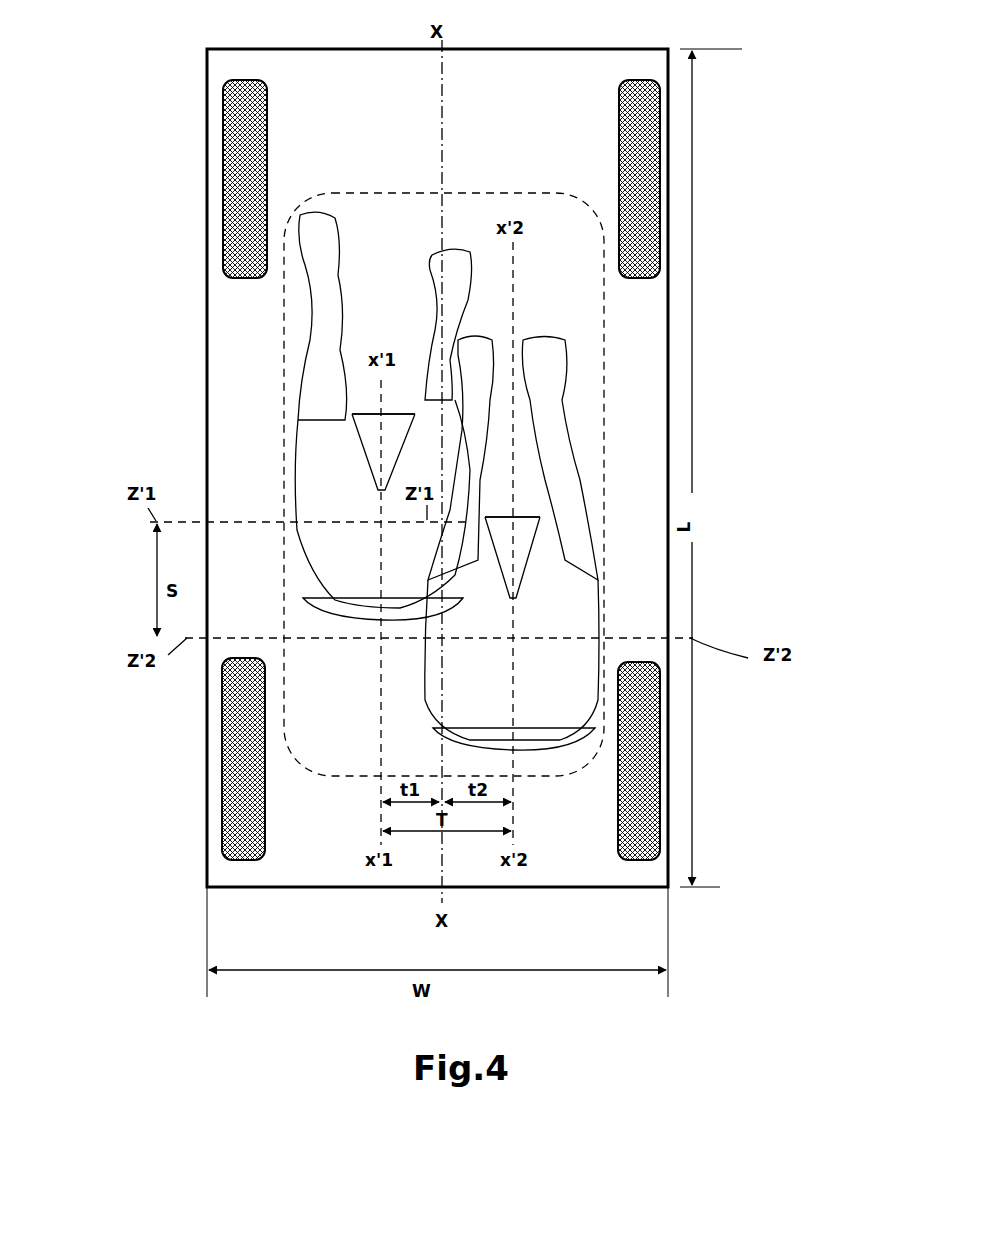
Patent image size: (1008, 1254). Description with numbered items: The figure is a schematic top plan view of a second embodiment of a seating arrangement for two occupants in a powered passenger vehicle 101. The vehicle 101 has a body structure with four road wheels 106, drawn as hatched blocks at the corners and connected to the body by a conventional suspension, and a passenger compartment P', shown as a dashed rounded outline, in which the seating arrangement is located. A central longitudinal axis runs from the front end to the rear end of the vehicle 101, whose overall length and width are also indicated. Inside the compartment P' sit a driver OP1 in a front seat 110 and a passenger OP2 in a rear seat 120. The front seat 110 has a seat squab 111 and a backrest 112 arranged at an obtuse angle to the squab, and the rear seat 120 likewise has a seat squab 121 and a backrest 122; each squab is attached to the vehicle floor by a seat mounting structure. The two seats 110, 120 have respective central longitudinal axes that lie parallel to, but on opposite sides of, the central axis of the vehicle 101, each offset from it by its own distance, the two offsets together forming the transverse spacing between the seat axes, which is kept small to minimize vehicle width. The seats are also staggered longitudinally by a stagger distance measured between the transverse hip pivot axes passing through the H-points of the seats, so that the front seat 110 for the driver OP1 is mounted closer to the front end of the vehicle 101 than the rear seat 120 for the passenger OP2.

The powered passenger vehicle 101 is at (200, 129).
The road wheels 106 is at (223, 195).
The front seat 110 is at (360, 433).
The seat squab 111 is at (355, 414).
The backrest 112 is at (330, 621).
The rear seat 120 is at (529, 526).
The seat squab 121 is at (490, 517).
The backrest 122 is at (437, 735).
The driver OP1 is at (284, 457).
The passenger OP2 is at (602, 522).
The passenger compartment P' is at (444, 463).